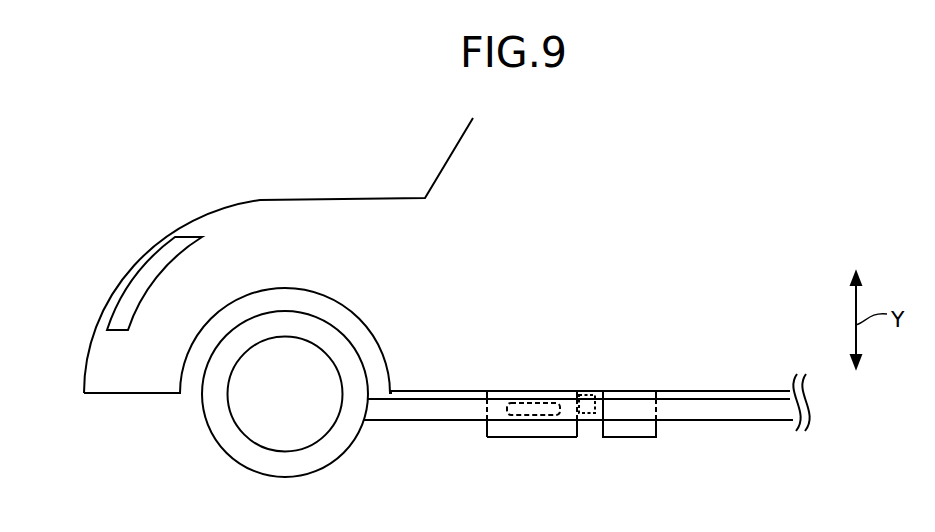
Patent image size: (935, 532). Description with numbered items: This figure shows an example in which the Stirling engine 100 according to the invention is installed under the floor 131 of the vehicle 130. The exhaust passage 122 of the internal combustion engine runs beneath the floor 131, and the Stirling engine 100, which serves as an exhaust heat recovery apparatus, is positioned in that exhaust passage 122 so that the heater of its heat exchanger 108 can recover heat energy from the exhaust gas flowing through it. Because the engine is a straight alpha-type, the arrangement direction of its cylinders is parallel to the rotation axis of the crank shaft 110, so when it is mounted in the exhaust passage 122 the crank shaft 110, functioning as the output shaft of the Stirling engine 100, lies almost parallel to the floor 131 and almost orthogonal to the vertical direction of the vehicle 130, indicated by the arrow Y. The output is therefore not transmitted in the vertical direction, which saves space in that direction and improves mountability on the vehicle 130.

The vehicle 130 is at (262, 207).
The exhaust passage 122 is at (428, 409).
The floor 131 is at (688, 374).
The Stirling engine 100 is at (507, 427).
The heat exchanger 108 is at (537, 399).
The crank shaft 110 is at (590, 420).